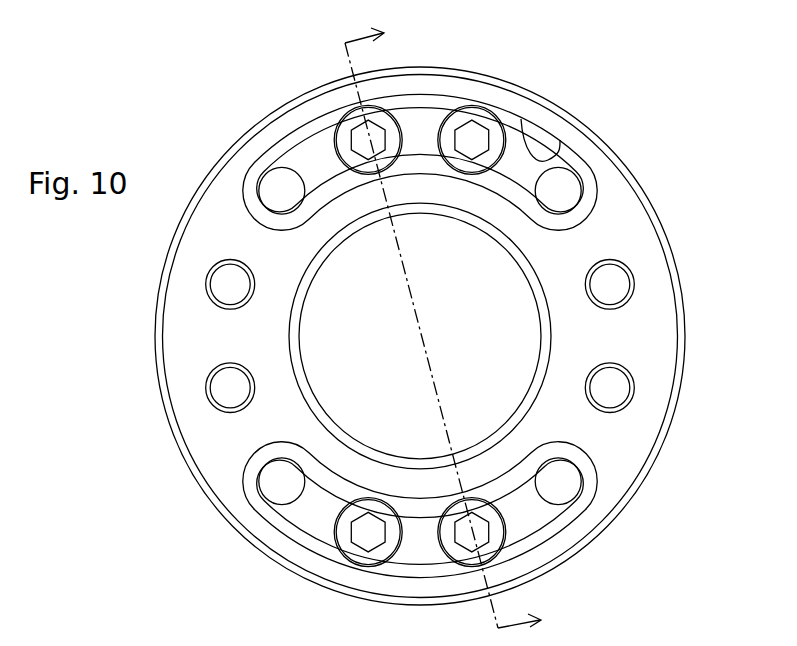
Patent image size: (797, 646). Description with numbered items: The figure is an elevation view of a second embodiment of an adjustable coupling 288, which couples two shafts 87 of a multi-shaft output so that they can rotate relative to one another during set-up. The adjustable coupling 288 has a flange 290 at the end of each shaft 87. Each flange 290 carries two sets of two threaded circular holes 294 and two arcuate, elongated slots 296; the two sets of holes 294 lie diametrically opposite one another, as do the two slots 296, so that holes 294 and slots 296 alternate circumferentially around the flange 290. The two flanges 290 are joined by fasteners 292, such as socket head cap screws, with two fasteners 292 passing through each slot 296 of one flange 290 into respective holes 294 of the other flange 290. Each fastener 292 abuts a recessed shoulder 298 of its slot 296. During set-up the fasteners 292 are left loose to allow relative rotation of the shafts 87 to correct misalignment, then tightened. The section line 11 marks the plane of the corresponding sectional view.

The adjustable coupling 288 is at (196, 112).
The flange 290 is at (648, 207).
The shaft 87 is at (523, 327).
The fastener 292 is at (388, 163).
The threaded circular hole 294 is at (210, 300).
The arcuate elongated slot 296 is at (556, 150).
The recessed shoulder 298 is at (570, 160).
The section line 11- 11 is at (461, 326).